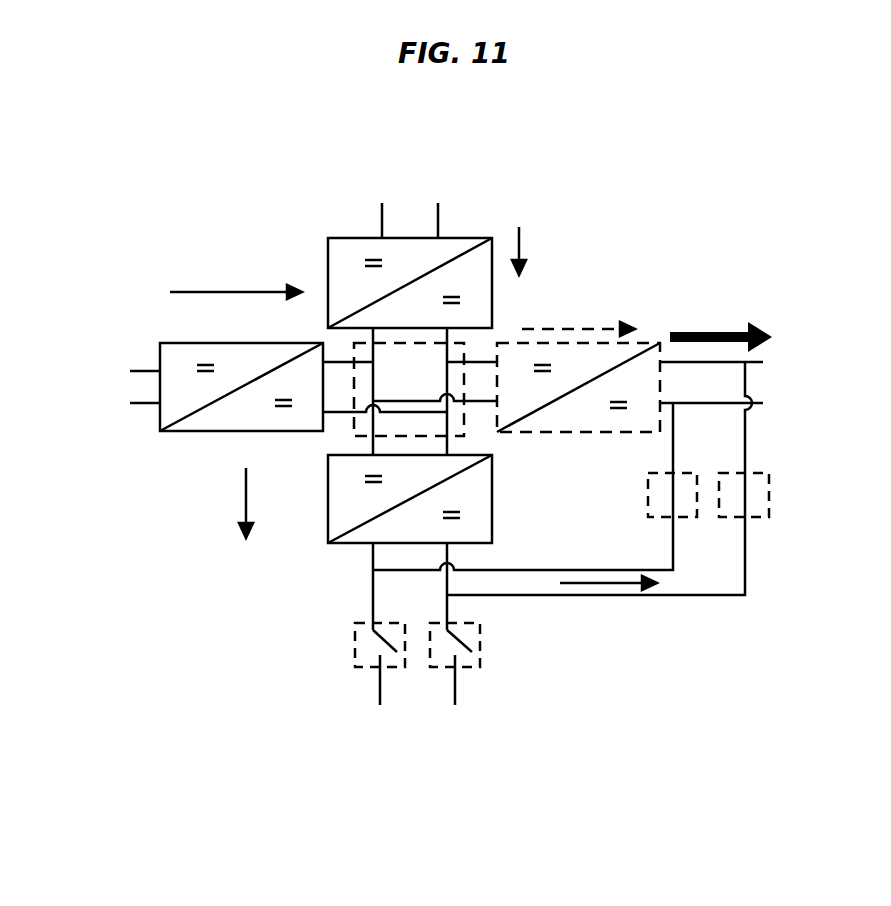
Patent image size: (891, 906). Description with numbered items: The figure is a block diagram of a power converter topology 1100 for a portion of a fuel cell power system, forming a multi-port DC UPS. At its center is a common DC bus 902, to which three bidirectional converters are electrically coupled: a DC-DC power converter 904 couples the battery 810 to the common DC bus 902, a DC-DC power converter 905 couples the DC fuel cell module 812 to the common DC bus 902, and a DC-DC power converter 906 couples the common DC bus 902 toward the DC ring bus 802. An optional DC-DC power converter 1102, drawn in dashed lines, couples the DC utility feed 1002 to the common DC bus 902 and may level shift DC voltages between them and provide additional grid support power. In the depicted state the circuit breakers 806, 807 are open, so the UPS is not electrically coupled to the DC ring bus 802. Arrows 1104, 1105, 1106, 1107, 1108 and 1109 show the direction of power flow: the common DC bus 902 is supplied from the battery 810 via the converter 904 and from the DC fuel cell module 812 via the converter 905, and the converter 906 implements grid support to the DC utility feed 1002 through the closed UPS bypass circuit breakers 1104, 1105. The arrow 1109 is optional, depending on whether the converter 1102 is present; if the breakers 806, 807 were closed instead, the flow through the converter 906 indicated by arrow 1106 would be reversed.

The power converter topology 1100 is at (630, 175).
The DC-DC power converter 904 is at (192, 343).
The DC-DC power converter 905 is at (492, 300).
The DC-DC power converter 906 is at (492, 520).
The common DC bus 902 is at (350, 432).
The DC-DC power converter 1102 is at (555, 433).
The arrow / UPS bypass circuit breaker 1104 is at (225, 291).
The arrow / UPS bypass circuit breaker 1105 is at (519, 242).
The arrow 1106 is at (246, 490).
The arrow 1107 is at (720, 332).
The arrow 1108 is at (600, 585).
The arrow 1109 is at (590, 325).
The circuit breaker 806 is at (362, 668).
The circuit breaker 807 is at (473, 668).
The DC fuel cell module 812 is at (410, 172).
The battery 810 is at (70, 387).
The DC utility feed 1002 is at (831, 387).
The DC ring bus 802 is at (417, 748).